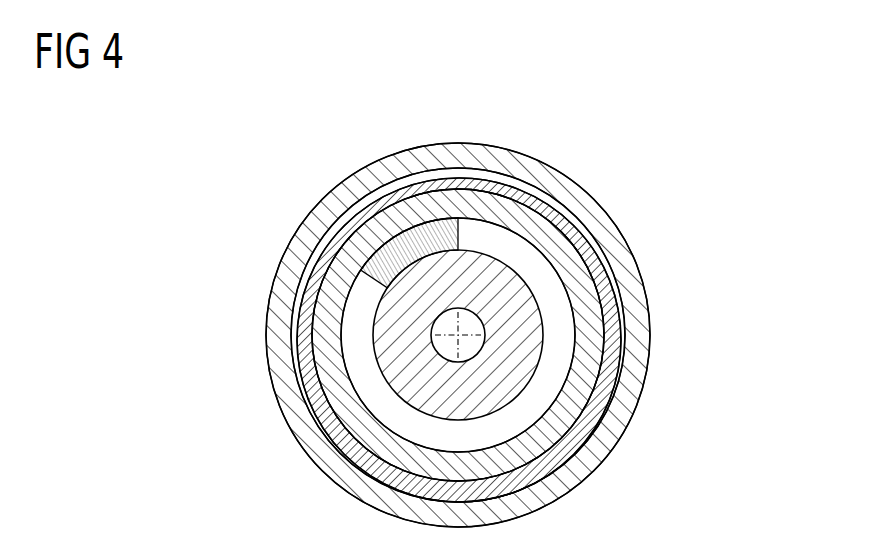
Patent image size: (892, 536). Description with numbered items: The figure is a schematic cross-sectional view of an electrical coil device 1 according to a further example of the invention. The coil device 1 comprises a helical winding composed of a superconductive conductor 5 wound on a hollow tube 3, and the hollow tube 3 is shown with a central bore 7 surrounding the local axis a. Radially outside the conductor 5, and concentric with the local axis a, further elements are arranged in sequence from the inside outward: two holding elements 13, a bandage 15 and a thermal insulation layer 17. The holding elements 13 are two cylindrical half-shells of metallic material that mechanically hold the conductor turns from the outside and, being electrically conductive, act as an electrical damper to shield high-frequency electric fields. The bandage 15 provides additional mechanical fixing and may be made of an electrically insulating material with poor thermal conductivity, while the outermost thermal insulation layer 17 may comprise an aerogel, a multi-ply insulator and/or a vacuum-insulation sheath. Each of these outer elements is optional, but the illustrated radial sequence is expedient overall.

The electrical coil device 1 is at (360, 128).
The hollow tube 3 is at (510, 292).
The superconductive conductor 5 is at (530, 257).
The bore 7 is at (468, 345).
The local axis a is at (462, 334).
The holding elements 13 is at (597, 392).
The bandage 15 is at (600, 440).
The thermal insulation layer 17 is at (602, 466).